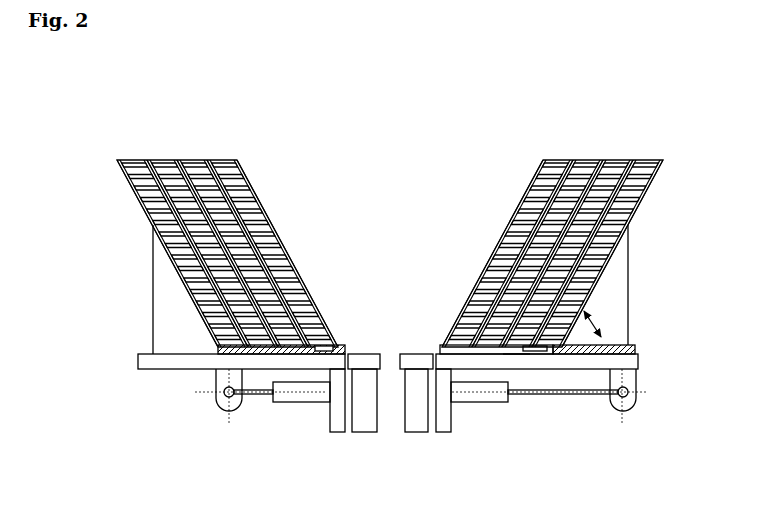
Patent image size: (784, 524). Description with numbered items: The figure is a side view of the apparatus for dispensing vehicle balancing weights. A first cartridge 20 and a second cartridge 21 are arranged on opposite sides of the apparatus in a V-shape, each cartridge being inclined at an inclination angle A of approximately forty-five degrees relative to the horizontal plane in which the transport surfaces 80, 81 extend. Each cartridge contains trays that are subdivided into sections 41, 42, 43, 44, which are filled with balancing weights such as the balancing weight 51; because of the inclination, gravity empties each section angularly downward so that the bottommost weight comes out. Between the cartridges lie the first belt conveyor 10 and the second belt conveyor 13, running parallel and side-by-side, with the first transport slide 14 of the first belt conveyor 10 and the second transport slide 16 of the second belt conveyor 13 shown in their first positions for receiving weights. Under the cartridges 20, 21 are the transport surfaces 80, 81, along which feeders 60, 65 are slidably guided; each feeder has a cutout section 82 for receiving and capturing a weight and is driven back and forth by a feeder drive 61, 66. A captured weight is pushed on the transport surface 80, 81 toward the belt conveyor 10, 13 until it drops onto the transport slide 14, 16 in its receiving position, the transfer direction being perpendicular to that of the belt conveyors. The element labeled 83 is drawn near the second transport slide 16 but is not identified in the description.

The first belt conveyor 10 is at (417, 425).
The second belt conveyor 13 is at (365, 425).
The first transport slide 14 is at (423, 354).
The second transport slide 16 is at (373, 354).
The first cartridge 20 is at (516, 168).
The second cartridge 21 is at (268, 171).
The section 41 is at (560, 153).
The section 42 is at (592, 153).
The section 43 is at (622, 153).
The section 44 is at (649, 153).
The balancing weight 51 is at (548, 353).
The feeder 60 is at (616, 348).
The feeder drive 61 is at (470, 397).
The feeder 65 is at (218, 348).
The feeder drive 66 is at (297, 397).
The transport surface 80 is at (632, 361).
The transport surface 81 is at (163, 370).
The cutout section 82 is at (515, 358).
The pivot joint 83 is at (349, 343).
The inclination angle A is at (598, 323).